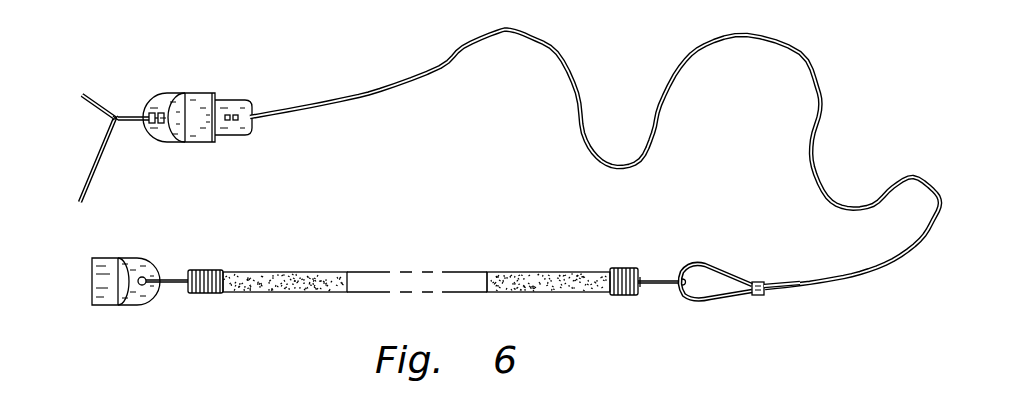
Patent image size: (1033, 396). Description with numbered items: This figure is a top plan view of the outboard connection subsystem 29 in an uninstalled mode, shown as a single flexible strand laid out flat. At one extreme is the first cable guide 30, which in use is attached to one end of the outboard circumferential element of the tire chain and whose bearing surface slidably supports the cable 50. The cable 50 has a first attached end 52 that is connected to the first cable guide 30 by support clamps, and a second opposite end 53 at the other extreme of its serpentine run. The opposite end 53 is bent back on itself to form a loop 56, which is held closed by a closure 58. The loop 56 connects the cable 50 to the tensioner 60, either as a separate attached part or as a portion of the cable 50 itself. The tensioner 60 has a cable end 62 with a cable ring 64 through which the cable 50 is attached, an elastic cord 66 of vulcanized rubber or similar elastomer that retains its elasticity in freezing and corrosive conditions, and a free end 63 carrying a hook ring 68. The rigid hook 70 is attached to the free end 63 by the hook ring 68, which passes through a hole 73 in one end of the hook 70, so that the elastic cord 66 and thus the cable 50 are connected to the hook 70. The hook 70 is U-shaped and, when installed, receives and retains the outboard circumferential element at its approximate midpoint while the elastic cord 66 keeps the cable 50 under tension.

The outboard connection subsystem 29 is at (160, 46).
The first cable guide 30 is at (170, 96).
The first attached end 52 is at (253, 109).
The cable 50 is at (551, 50).
The tensioner 60 is at (396, 222).
The hook 70 is at (110, 306).
The hole 73 is at (145, 302).
The free end 63 is at (173, 284).
The hook ring 68 is at (207, 269).
The elastic cord 66 is at (282, 293).
The cable end 62 is at (642, 296).
The cable ring 64 is at (660, 272).
The loop 56 is at (697, 301).
The closure 58 is at (758, 296).
The second opposite end 53 is at (770, 293).